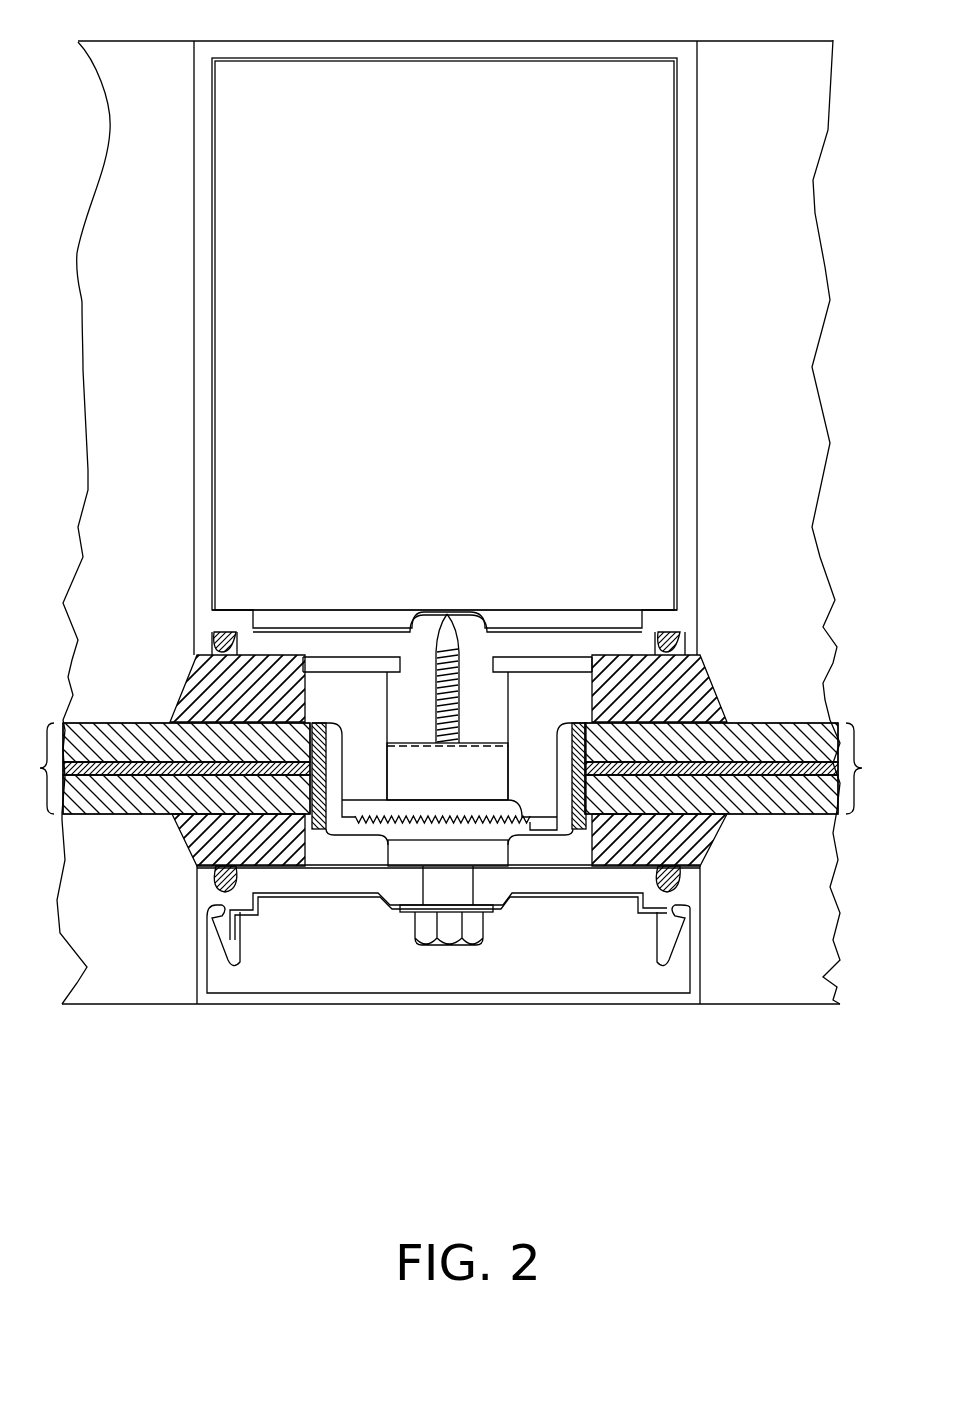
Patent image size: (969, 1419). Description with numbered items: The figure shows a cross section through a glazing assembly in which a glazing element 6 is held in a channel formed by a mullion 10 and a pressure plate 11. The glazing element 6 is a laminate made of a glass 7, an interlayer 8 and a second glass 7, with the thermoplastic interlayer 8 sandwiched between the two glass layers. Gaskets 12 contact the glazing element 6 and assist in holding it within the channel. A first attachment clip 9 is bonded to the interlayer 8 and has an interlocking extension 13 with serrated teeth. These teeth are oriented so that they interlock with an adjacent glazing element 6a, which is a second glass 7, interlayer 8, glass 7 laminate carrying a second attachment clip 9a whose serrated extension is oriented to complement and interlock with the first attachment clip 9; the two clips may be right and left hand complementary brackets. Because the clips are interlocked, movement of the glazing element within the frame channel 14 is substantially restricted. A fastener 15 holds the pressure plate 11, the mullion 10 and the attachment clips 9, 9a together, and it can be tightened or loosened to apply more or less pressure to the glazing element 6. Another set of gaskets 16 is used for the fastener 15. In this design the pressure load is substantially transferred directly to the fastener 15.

The glazing element 6 is at (162, 768).
The adjacent glazing element 6a is at (739, 768).
The glass 7 is at (103, 733).
The interlayer 8 is at (157, 757).
The first attachment clip 9 is at (337, 734).
The second attachment clip 9a is at (557, 760).
The mullion 10 is at (543, 40).
The pressure plate 11 is at (582, 895).
The gaskets 12 is at (197, 672).
The interlocking extension 13 is at (372, 812).
The frame channel 14 is at (345, 667).
The fastener 15 is at (440, 947).
The gaskets for the fastener 16 is at (500, 852).